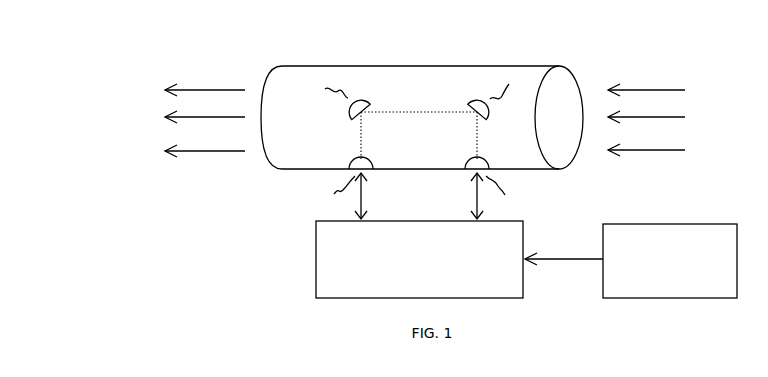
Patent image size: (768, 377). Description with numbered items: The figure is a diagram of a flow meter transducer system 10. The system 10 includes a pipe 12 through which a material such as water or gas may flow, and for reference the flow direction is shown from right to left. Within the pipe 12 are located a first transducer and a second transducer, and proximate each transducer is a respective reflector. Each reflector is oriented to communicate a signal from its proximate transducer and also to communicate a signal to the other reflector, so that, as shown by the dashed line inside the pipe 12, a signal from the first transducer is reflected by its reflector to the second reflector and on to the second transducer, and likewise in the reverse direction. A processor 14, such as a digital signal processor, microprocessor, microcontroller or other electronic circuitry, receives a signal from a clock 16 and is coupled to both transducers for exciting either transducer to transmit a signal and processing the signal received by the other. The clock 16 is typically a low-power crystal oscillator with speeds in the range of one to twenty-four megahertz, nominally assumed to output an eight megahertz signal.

The flow meter transducer system 10 is at (53, 55).
The pipe 12 is at (422, 141).
The processor 14 is at (419, 259).
The clock 16 is at (631, 261).